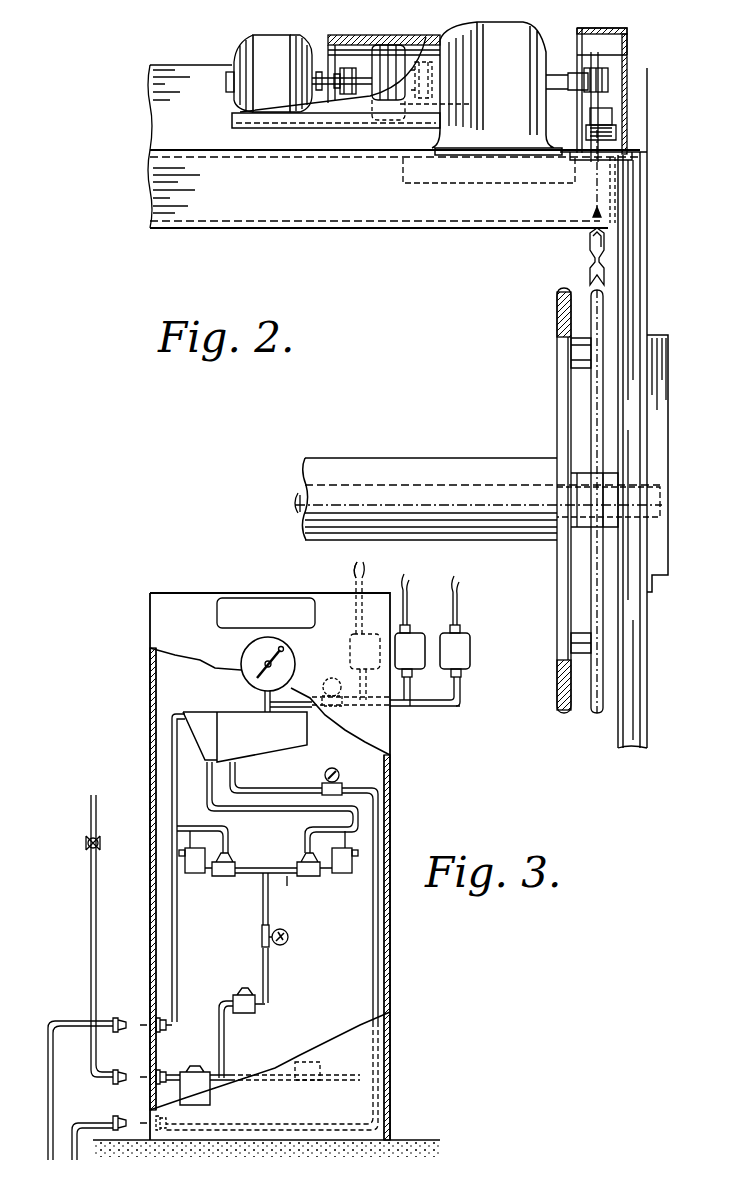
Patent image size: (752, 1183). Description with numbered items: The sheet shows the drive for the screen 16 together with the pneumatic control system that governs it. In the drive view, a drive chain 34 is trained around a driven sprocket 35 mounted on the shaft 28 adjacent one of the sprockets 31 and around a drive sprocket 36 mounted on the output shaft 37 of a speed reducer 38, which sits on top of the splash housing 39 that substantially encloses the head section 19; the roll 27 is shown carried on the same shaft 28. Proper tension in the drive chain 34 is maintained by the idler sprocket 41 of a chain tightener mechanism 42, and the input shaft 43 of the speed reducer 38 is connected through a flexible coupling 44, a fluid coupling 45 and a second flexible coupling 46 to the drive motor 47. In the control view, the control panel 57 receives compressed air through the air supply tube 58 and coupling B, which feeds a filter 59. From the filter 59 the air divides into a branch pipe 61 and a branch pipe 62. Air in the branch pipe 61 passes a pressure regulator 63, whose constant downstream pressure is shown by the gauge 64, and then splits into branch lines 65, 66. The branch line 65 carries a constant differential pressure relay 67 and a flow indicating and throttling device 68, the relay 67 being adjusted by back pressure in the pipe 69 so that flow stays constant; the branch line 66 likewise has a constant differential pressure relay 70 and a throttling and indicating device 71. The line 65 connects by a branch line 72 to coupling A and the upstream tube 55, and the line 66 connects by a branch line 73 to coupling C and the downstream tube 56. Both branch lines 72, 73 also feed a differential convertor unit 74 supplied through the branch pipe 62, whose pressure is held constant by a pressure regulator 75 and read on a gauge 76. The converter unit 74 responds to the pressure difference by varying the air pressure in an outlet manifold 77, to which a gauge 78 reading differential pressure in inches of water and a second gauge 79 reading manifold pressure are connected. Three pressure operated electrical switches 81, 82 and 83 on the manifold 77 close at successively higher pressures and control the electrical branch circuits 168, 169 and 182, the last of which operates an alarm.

In FIG. 2, the screen 16 is at (657, 256).
In FIG. 2, the head section 19 is at (676, 412).
In FIG. 2, the roll 27 is at (451, 453).
In FIG. 2, the shaft 28 is at (572, 528).
In FIG. 2, the sprocket 31 is at (557, 310).
In FIG. 2, the drive chain 34 is at (588, 252).
In FIG. 2, the driven sprocket 35 is at (604, 323).
In FIG. 2, the drive sprocket 36 is at (603, 60).
In FIG. 2, the output shaft 37 is at (610, 80).
In FIG. 2, the speed reducer 38 is at (536, 28).
In FIG. 2, the splash housing 39 is at (180, 150).
In FIG. 2, the idler sprocket 41 is at (616, 130).
In FIG. 2, the chain tightener mechanism 42 is at (613, 112).
In FIG. 2, the input shaft 43 is at (434, 74).
In FIG. 2, the flexible coupling 44 is at (435, 103).
In FIG. 2, the fluid coupling 45 is at (387, 46).
In FIG. 2, the flexible coupling 46 is at (343, 68).
In FIG. 2, the drive motor 47 is at (268, 42).
In FIG. 3, the tube 55 is at (47, 1088).
In FIG. 3, the tube 56 is at (70, 1133).
In FIG. 3, the control panel 57 is at (391, 793).
In FIG. 3, the air supply tube 58 is at (97, 906).
In FIG. 3, the filter 59 is at (200, 1088).
In FIG. 3, the branch pipe 61 is at (219, 1031).
In FIG. 3, the branch pipe 62 is at (279, 1081).
In FIG. 3, the pressure regulator 63 is at (242, 993).
In FIG. 3, the gauge 64 is at (283, 945).
In FIG. 3, the branch line 65 is at (252, 877).
In FIG. 3, the branch line 66 is at (287, 877).
In FIG. 3, the constant differential pressure relay 67 is at (238, 861).
In FIG. 3, the flow indicating and throttling device 68 is at (194, 874).
In FIG. 3, the pipe 69 is at (229, 834).
In FIG. 3, the constant differential pressure relay 70 is at (300, 859).
In FIG. 3, the throttling and indicating device 71 is at (341, 875).
In FIG. 3, the branch line 72 is at (178, 979).
In FIG. 3, the branch line 73 is at (372, 985).
In FIG. 3, the differential convertor unit 74 is at (237, 713).
In FIG. 3, the pressure regulator 75 is at (303, 1062).
In FIG. 3, the gauge 76 is at (338, 772).
In FIG. 3, the outlet manifold 77 is at (293, 700).
In FIG. 3, the gauge 78 is at (242, 660).
In FIG. 3, the gauge 79 is at (330, 678).
In FIG. 3, the pressure operated electrical switch 81 is at (349, 648).
In FIG. 3, the pressure operated electrical switch 82 is at (412, 633).
In FIG. 3, the pressure operated electrical switch 83 is at (470, 651).
In FIG. 3, the branch circuit 168 is at (365, 597).
In FIG. 3, the branch circuit 169 is at (408, 601).
In FIG. 3, the branch circuit 182 is at (458, 600).